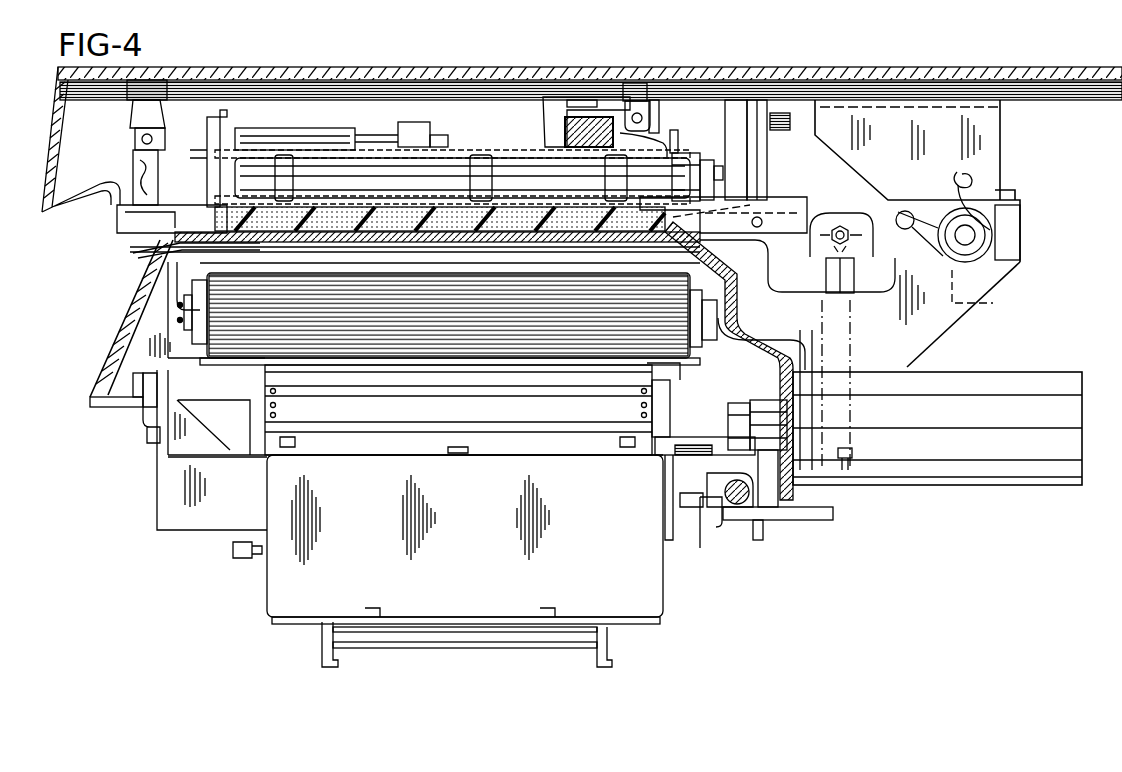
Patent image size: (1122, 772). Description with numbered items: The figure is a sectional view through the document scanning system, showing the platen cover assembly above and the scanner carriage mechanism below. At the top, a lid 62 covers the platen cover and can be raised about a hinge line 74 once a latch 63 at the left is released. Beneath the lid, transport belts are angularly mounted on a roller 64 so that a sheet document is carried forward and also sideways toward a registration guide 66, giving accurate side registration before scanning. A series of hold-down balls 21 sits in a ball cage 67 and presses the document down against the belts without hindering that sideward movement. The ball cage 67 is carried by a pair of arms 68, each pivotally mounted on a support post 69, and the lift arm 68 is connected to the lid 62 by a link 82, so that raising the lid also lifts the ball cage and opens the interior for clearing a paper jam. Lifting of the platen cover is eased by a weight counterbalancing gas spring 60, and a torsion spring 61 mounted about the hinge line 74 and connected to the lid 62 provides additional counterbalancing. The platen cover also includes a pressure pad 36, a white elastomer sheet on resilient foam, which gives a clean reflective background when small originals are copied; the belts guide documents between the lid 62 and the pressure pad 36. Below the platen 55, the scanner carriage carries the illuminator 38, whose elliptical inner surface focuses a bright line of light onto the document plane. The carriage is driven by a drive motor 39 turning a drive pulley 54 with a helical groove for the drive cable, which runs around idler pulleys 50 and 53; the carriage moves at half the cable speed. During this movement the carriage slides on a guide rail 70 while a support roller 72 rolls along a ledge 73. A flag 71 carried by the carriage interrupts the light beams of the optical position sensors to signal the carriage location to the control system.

The hold-down balls 21 is at (553, 147).
The pressure pad 36 is at (158, 247).
The illuminator 38 is at (233, 347).
The drive motor 39 is at (1024, 371).
The idler pulley 50 is at (690, 446).
The idler pulley 53 is at (727, 440).
The drive pulley 54 is at (769, 400).
The platen 55 is at (318, 240).
The gas spring 60 is at (827, 270).
The torsion spring 61 is at (955, 175).
The lid 62 is at (367, 66).
The latch 63 is at (130, 147).
The roller 64 is at (288, 160).
The registration guide 66 is at (660, 130).
The ball cage 67 is at (553, 98).
The arms 68 is at (613, 100).
The support post 69 is at (766, 168).
The guide rail 70 is at (748, 510).
The flag 71 is at (700, 547).
The support roller 72 is at (147, 413).
The ledge 73 is at (92, 402).
The hinge line 74 is at (965, 235).
The link 82 is at (718, 120).